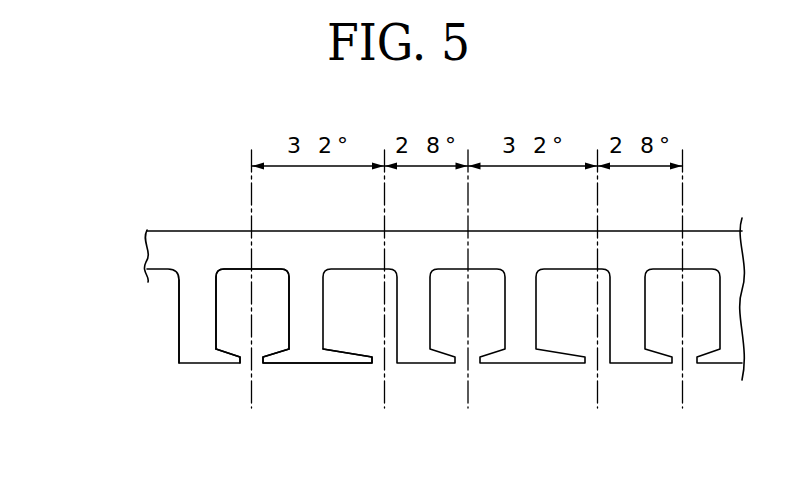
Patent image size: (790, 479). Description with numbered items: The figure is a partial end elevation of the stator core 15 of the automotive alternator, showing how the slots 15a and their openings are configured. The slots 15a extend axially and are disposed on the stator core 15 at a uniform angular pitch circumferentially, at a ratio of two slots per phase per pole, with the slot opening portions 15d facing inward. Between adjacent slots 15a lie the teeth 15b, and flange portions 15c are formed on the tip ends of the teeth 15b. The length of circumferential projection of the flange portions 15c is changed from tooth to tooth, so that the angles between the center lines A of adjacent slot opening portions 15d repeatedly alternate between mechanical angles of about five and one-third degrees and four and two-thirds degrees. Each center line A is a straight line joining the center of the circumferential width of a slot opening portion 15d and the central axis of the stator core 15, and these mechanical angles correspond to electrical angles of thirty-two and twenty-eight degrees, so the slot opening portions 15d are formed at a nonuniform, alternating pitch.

The stator core 15 is at (723, 230).
The slot 15a is at (223, 297).
The tooth 15b is at (188, 313).
The flange portion 15c is at (332, 356).
The slot opening portion 15d is at (247, 361).
The center line A is at (473, 387).